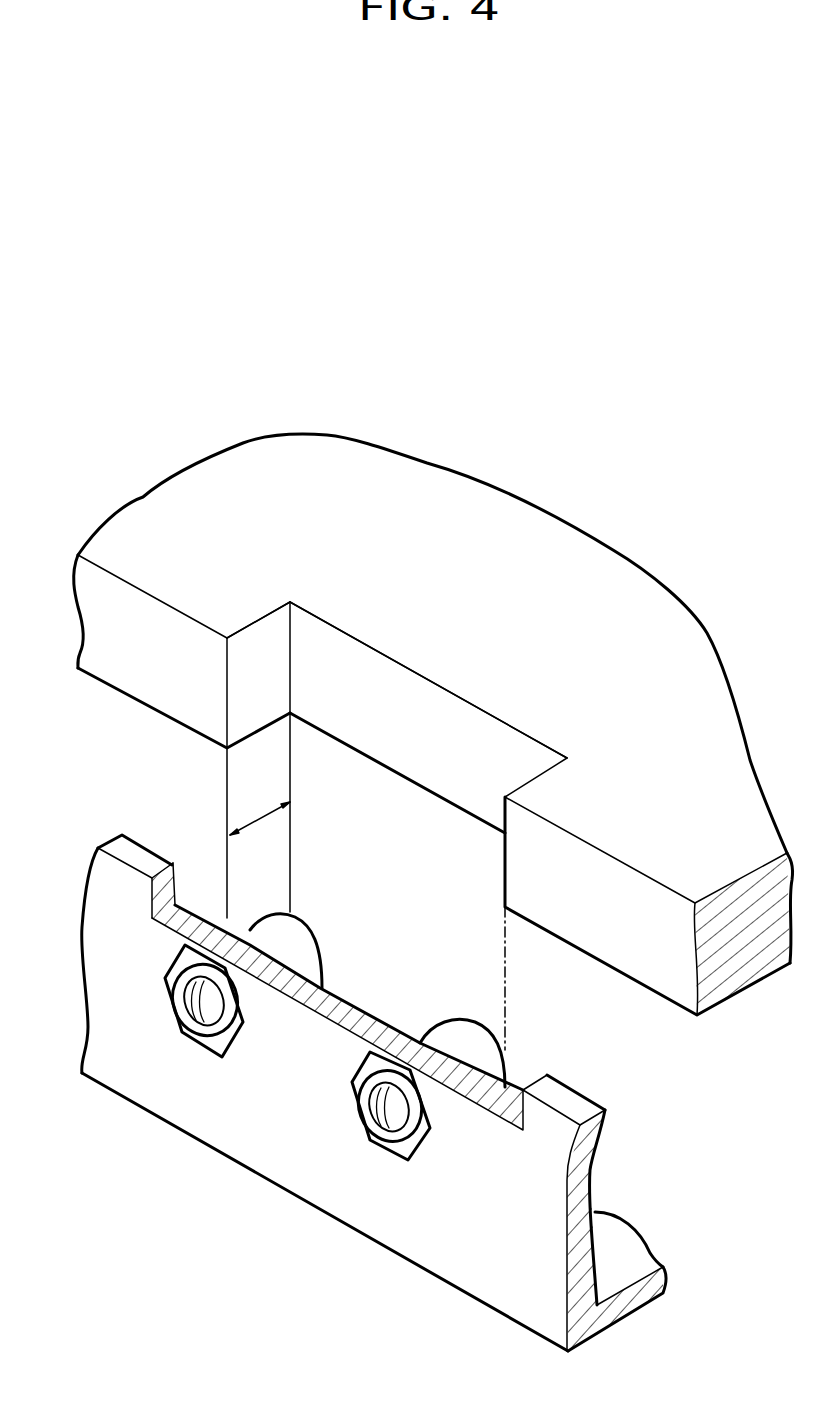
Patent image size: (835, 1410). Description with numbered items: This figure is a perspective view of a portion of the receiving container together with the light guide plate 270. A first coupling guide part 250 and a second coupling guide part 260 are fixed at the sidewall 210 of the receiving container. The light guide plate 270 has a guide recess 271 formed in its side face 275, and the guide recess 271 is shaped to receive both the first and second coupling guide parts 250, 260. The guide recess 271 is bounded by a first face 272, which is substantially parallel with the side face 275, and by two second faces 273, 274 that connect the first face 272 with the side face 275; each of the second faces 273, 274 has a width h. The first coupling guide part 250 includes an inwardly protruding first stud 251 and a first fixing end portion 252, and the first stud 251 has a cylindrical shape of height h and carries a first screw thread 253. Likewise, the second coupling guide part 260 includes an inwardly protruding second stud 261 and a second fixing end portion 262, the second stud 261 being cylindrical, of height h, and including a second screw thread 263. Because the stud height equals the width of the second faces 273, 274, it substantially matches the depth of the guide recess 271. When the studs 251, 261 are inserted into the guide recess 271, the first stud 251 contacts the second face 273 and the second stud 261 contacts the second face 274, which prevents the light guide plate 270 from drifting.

The sidewall 210 is at (113, 1063).
The first coupling guide part 250 is at (201, 1064).
The first stud 251 is at (308, 963).
The first fixing end portion 252 is at (175, 999).
The first screw thread 253 is at (212, 1016).
The second coupling guide part 260 is at (385, 1169).
The second stud 261 is at (493, 1067).
The second fixing end portion 262 is at (365, 1102).
The second screw thread 263 is at (388, 1127).
The light guide plate 270 is at (597, 557).
The guide recess 271 is at (438, 535).
The first face 272 is at (318, 632).
The second face 273 is at (268, 632).
The second face 274 is at (530, 780).
The side face 275 is at (652, 953).